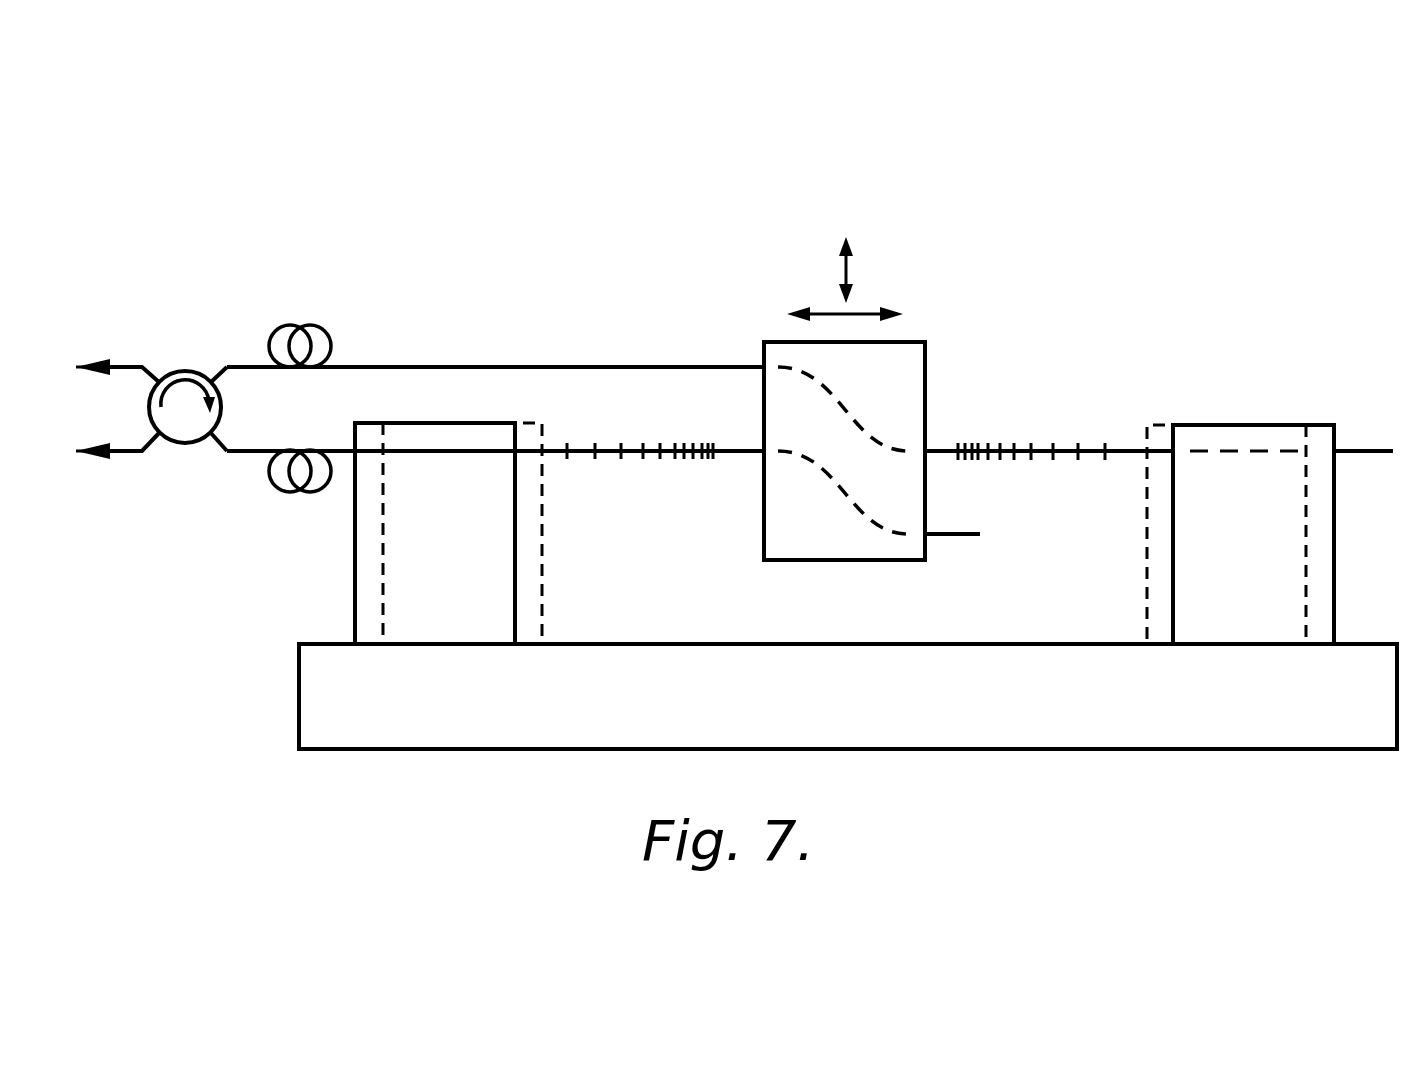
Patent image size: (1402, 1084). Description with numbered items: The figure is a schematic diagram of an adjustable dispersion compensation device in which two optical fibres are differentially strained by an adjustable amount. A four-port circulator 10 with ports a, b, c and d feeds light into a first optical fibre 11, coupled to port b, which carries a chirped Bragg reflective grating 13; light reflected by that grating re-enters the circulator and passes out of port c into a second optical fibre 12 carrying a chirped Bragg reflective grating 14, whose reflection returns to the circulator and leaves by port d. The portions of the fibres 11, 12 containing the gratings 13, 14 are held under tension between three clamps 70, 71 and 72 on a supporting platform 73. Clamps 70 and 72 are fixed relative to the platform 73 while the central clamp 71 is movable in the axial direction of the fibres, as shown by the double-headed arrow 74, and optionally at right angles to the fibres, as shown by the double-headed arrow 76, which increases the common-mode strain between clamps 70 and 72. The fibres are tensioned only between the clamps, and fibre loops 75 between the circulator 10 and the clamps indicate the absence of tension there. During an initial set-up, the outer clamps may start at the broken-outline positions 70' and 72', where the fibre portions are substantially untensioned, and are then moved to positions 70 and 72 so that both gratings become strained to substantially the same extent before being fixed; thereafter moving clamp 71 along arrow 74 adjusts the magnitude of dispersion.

The four-port circulator 10 is at (178, 402).
The optical fibre 11 is at (620, 366).
The optical fibre 12 is at (337, 449).
The chirped Bragg reflective grating 13 is at (1000, 443).
The chirped Bragg reflective grating 14 is at (595, 460).
The clamp 70 is at (396, 533).
The broken-outline position of clamp 70 70' is at (572, 533).
The movable clamp 71 is at (848, 563).
The clamp 72 is at (1253, 482).
The broken-outline position of clamp 72 72' is at (1115, 534).
The supporting platform 73 is at (299, 695).
The double-headed arrow 74 is at (862, 308).
The fibre loops 75 is at (318, 326).
The double-headed arrow 76 is at (840, 268).